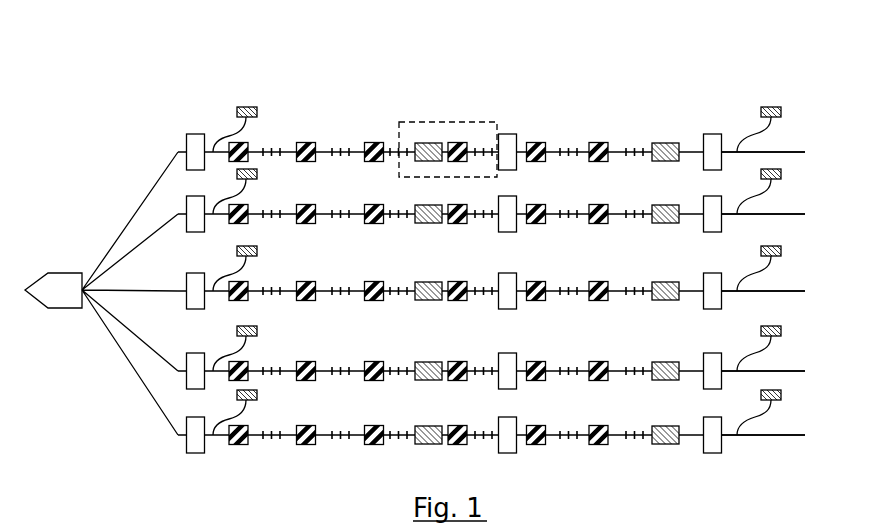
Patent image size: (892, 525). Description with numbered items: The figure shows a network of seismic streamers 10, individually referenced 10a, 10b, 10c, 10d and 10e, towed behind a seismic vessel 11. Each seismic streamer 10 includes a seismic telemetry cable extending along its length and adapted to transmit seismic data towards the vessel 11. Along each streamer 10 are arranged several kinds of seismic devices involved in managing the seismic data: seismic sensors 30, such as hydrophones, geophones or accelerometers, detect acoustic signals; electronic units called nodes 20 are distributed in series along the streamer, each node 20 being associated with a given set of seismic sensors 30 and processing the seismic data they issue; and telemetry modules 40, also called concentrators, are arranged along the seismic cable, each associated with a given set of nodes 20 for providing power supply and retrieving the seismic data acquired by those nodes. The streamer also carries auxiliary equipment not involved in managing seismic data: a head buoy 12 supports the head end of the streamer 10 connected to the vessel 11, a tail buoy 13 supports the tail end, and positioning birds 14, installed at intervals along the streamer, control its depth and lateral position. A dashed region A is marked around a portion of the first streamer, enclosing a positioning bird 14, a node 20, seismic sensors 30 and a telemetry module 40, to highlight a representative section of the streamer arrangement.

The seismic streamer 10 is at (772, 150).
The seismic streamer 10a is at (789, 154).
The seismic streamer 10b is at (789, 216).
The seismic streamer 10c is at (789, 293).
The seismic streamer 10d is at (789, 373).
The seismic streamer 10e is at (789, 437).
The seismic vessel 11 is at (61, 309).
The head buoy 12 is at (250, 106).
The tail buoy 13 is at (775, 106).
The positioning bird 14 is at (428, 142).
The node 20 is at (374, 142).
The seismic sensor 30 is at (347, 142).
The telemetry module 40 is at (205, 133).
The region A is at (399, 177).